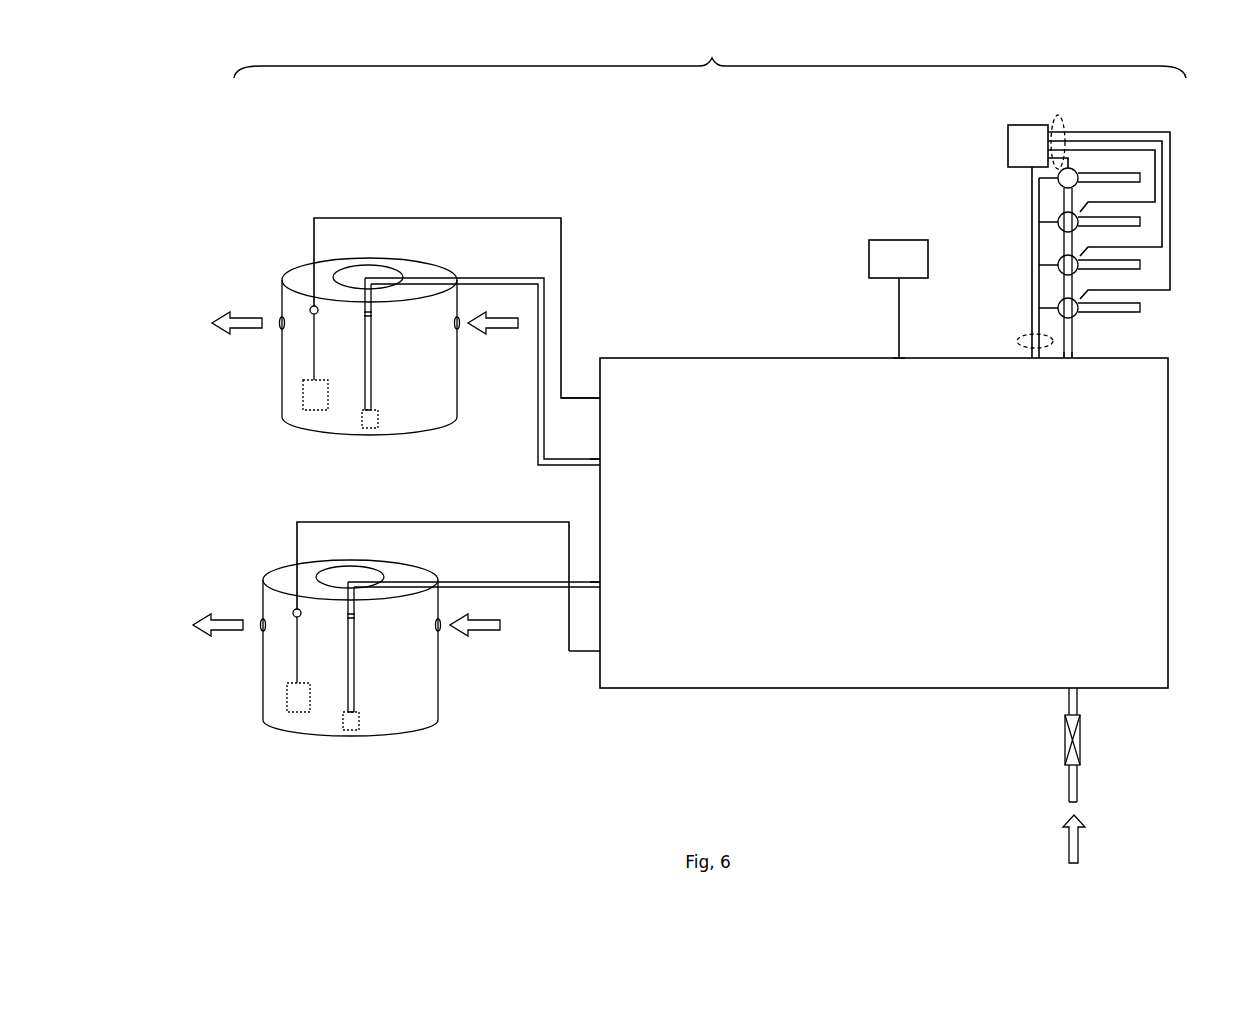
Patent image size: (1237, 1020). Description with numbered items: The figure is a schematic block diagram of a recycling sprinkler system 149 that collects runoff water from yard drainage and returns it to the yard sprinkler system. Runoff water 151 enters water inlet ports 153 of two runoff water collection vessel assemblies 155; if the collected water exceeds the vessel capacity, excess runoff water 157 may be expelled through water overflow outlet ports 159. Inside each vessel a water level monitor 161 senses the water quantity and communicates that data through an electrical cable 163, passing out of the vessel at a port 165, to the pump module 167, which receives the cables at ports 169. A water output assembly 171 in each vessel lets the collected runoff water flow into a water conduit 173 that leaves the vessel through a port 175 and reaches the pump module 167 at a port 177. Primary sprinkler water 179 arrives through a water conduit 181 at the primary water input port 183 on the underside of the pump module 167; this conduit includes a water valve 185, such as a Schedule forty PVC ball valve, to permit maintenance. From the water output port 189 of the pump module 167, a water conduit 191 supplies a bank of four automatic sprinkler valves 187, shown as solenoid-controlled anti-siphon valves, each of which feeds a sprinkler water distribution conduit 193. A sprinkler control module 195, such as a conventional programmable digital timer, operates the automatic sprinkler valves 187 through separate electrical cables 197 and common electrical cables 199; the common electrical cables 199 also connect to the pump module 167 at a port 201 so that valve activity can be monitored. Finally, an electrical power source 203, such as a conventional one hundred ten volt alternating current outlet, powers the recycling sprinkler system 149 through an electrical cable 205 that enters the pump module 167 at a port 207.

The recycling sprinkler system 149 is at (710, 46).
The runoff water 151 is at (496, 340).
The water inlet ports 153 is at (459, 335).
The runoff water collection vessel assemblies 155 is at (437, 437).
The excess runoff water 157 is at (231, 340).
The water overflow outlet ports 159 is at (276, 318).
The water level monitors 161 is at (300, 408).
The electrical cables 163 is at (311, 238).
The ports 165 is at (310, 304).
The pump module 167 is at (722, 700).
The ports 169 is at (597, 394).
The water output assemblies 171 is at (371, 422).
The water conduits 173 is at (497, 270).
The ports 175 is at (364, 318).
The ports 177 is at (597, 572).
The primary sprinkler water 179 is at (1060, 842).
The water conduit 181 is at (1060, 787).
The primary water input port 183 is at (1080, 693).
The water valve 185 is at (1086, 745).
The automatic sprinkler valves 187 is at (1060, 306).
The water output port 189 is at (1083, 361).
The water conduit 191 is at (1080, 338).
The sprinkler water distribution conduits 193 is at (1138, 222).
The sprinkler control module 195 is at (1018, 146).
The separate electrical cables 197 is at (1066, 123).
The common electrical cables 199 is at (1010, 333).
The port 201 is at (1030, 357).
The electrical power source 203 is at (880, 266).
The electrical cable 205 is at (890, 323).
The port 207 is at (893, 355).